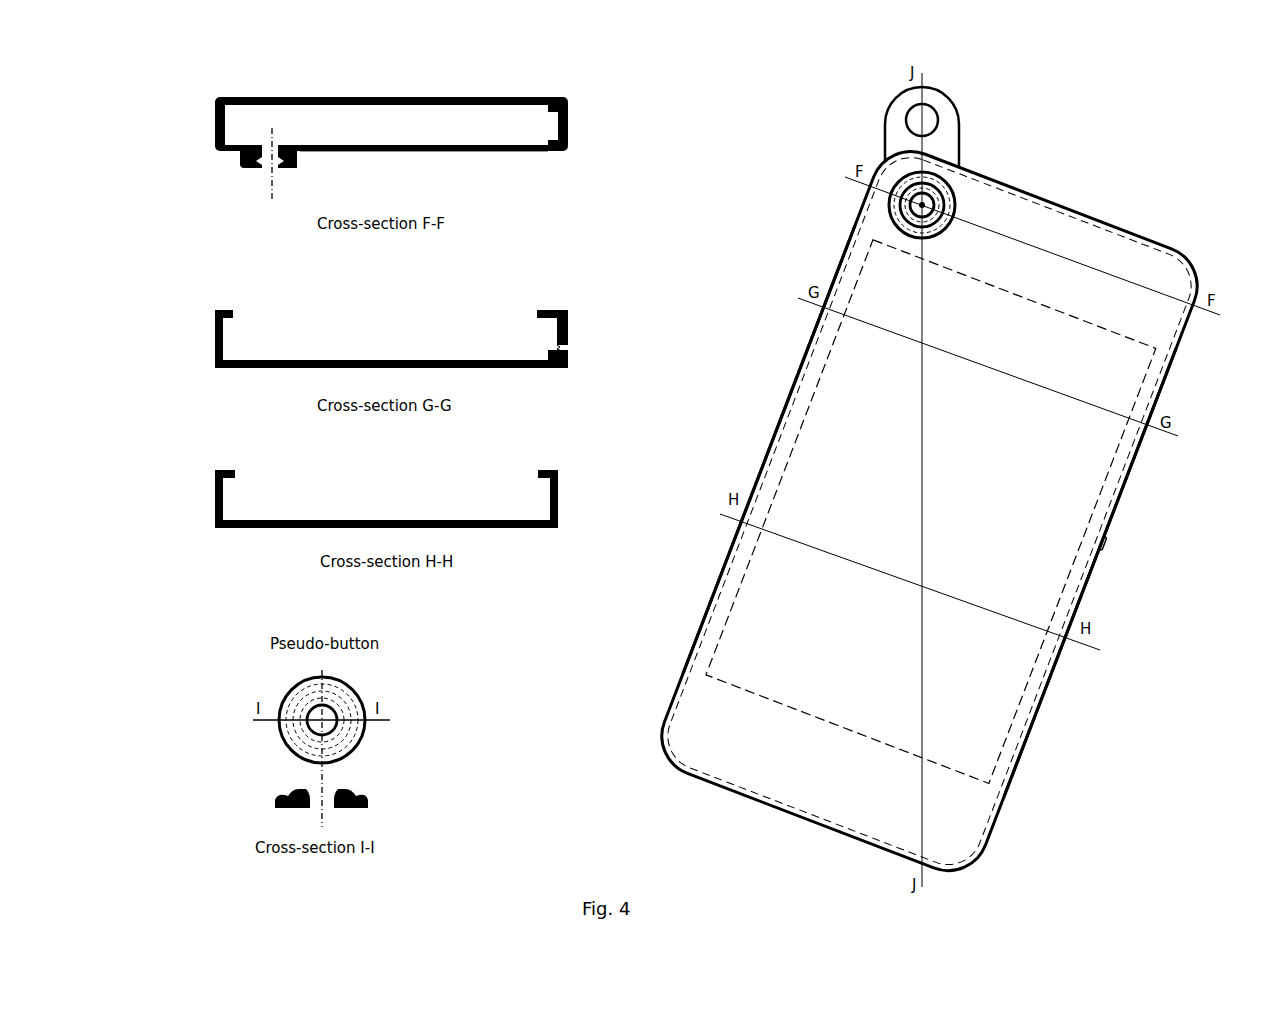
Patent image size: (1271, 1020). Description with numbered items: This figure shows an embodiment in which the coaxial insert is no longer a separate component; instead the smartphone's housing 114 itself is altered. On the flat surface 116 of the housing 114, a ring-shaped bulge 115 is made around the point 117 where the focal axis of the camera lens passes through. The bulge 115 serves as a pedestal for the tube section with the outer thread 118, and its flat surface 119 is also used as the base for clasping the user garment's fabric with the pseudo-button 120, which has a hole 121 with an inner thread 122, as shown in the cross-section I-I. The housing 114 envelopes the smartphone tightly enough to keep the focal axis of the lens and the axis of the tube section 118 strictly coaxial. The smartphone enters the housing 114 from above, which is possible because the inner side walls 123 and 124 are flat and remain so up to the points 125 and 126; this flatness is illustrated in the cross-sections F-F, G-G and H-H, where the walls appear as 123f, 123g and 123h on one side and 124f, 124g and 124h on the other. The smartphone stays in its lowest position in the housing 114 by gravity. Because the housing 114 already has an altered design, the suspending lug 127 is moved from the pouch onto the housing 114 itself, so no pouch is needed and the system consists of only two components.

The housing 114 is at (1025, 267).
The ring-shaped bulge 115 is at (302, 157).
The flat surface of the housing 116 is at (397, 154).
The point where the focal axis of the camera lens passes through 117 is at (277, 141).
The tube section with outer thread 118 is at (292, 169).
The flat surface of the bulge 119 is at (249, 162).
The pseudo-button 120 is at (342, 697).
The hole 121 is at (330, 727).
The inner thread 122 is at (316, 793).
The inner side wall 123 is at (806, 355).
The inner side wall at cross-section F-F 123f is at (226, 121).
The inner side wall at cross-section G-G 123g is at (229, 334).
The inner side wall at cross-section H-H 123h is at (230, 497).
The inner side wall 124 is at (1093, 564).
The inner side wall at cross-section F-F 124f is at (546, 110).
The inner side wall at cross-section G-G 124g is at (541, 322).
The inner side wall at cross-section H-H 124h is at (546, 497).
The point up to which the inner side wall remains flat 125 is at (876, 162).
The point up to which the inner side wall remains flat 126 is at (1204, 266).
The suspending lug 127 is at (941, 136).